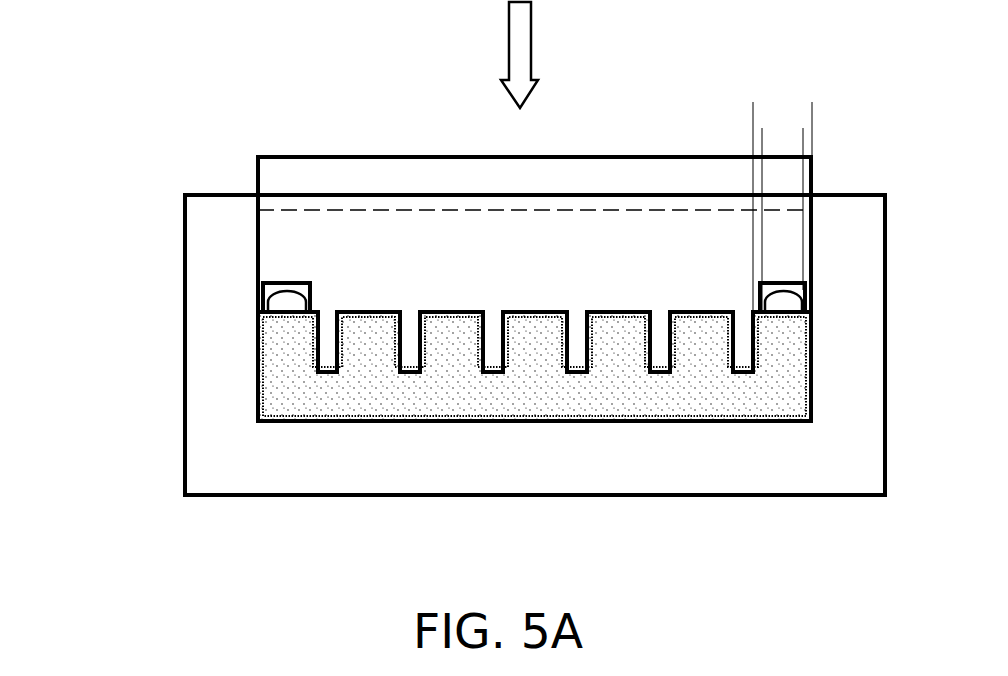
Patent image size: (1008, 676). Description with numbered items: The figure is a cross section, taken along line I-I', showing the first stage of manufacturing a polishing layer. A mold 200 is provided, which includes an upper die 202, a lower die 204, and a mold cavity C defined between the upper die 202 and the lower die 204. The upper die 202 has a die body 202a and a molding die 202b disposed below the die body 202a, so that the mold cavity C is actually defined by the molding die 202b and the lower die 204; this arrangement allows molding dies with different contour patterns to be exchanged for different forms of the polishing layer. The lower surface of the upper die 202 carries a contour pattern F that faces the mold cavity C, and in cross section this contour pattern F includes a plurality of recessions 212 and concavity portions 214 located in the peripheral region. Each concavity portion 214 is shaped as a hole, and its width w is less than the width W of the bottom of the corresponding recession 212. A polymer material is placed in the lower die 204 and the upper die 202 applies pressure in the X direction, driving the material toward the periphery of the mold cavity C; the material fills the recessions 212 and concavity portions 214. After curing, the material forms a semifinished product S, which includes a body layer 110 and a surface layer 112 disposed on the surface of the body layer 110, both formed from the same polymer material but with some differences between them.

The mold 200 is at (98, 80).
The upper die 202 is at (170, 62).
The die body 202a is at (313, 182).
The molding die 202b is at (285, 225).
The lower die 204 is at (217, 220).
The mold cavity C is at (372, 360).
The semifinished product S is at (123, 357).
The body layer 110 is at (277, 405).
The surface layer 112 is at (258, 373).
The contour pattern F is at (713, 87).
The recession 212 is at (612, 313).
The concavity portion 214 is at (771, 282).
The width of the bottom of the recession W is at (812, 110).
The width of the concavity portion w is at (803, 142).
The X direction X is at (509, 12).
The line I-I' (first end) I is at (258, 530).
The line I-I' (second end) I' is at (811, 530).